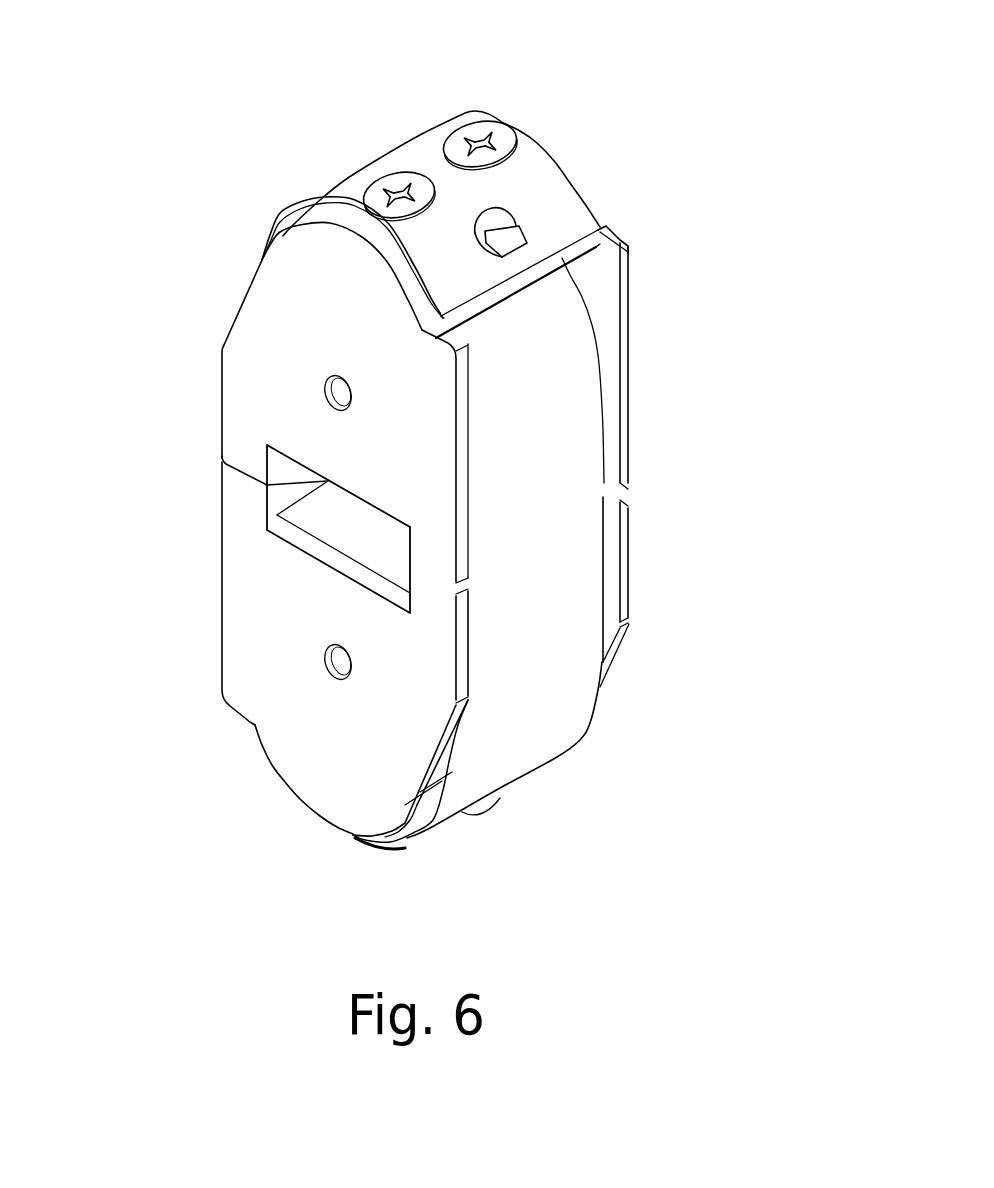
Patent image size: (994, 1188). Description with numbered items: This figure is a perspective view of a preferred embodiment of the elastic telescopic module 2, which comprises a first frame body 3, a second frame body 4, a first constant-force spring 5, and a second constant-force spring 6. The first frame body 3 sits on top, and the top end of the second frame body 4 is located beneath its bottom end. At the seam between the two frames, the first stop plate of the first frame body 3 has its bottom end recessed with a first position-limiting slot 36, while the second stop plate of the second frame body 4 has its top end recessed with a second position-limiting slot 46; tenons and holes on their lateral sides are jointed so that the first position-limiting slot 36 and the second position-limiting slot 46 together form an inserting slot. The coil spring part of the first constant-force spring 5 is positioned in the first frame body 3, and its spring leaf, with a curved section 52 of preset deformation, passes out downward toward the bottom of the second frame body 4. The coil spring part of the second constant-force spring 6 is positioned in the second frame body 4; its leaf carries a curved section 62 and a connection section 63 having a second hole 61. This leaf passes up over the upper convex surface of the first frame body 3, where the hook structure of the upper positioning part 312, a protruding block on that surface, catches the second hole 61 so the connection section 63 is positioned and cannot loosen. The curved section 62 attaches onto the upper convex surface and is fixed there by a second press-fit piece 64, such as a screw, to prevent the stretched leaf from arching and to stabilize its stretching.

The elastic telescopic module 2 is at (672, 111).
The first frame body 3 is at (219, 370).
The second frame body 4 is at (219, 652).
The first constant-force spring 5 is at (562, 610).
The second constant-force spring 6 is at (385, 154).
The first position-limiting slot 36 is at (302, 478).
The second position-limiting slot 46 is at (332, 532).
The curved section 52 is at (417, 840).
The second hole 61 is at (490, 222).
The curved section 62 is at (418, 155).
The connection section 63 is at (572, 220).
The second press-fit piece 64 is at (503, 137).
The upper positioning part 312 is at (518, 227).